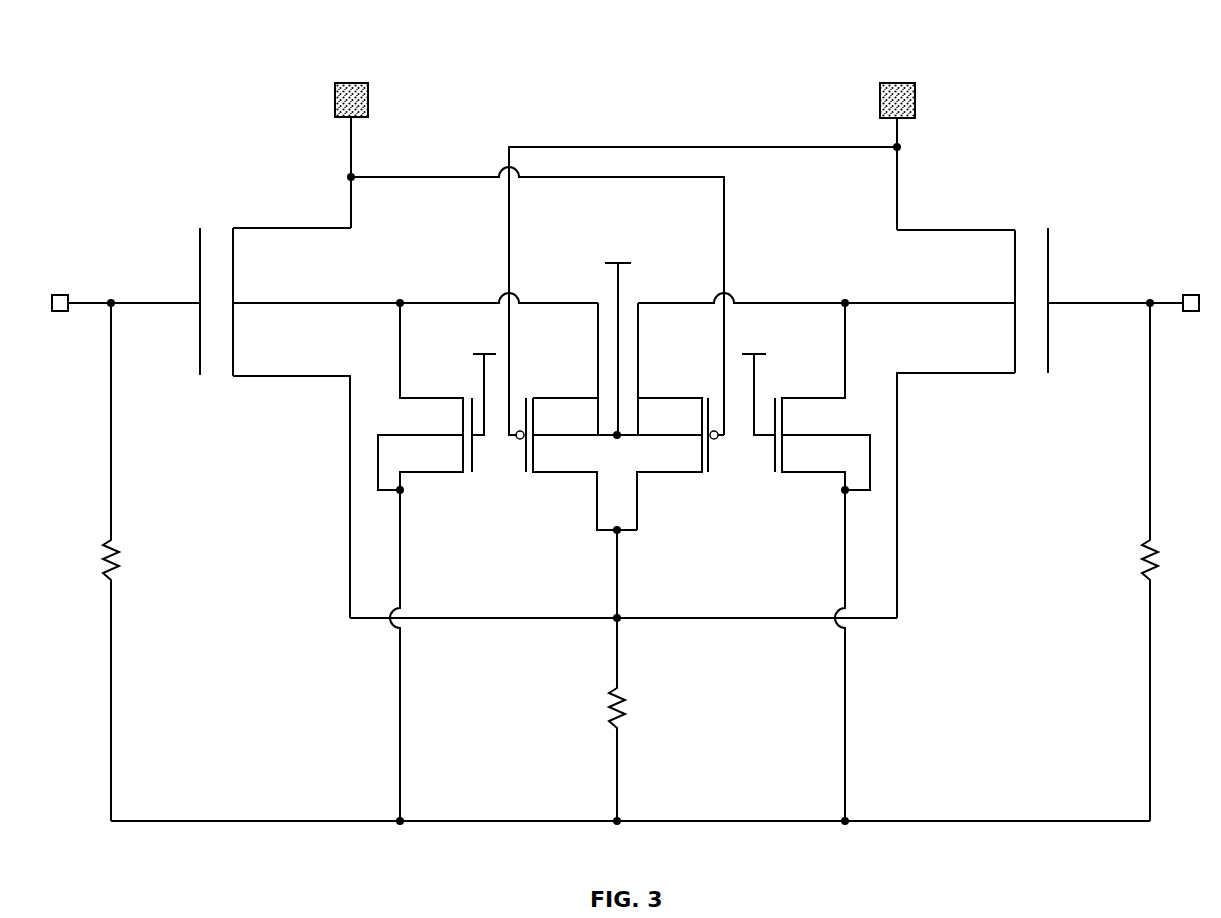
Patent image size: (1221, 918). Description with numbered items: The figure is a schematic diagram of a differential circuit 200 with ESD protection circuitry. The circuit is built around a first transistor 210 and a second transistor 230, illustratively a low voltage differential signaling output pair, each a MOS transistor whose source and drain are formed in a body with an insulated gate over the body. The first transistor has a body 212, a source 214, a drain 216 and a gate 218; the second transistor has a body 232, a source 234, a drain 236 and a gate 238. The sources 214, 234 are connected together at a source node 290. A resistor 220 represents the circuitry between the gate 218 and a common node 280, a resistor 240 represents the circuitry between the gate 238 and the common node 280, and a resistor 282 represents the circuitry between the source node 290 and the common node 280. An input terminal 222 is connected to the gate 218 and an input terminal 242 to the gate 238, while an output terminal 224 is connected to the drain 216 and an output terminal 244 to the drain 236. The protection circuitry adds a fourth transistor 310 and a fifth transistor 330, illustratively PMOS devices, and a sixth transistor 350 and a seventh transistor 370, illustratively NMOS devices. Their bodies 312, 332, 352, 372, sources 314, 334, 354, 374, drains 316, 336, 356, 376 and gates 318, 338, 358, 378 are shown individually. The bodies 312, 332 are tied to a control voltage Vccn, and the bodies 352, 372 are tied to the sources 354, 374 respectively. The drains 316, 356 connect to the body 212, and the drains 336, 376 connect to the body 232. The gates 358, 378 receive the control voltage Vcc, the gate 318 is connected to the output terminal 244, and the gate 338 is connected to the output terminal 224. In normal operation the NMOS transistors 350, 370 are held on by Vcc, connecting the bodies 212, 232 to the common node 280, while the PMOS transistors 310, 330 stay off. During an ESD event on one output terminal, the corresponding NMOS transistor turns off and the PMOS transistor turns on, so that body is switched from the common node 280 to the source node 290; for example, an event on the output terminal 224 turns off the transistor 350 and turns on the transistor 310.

The differential circuit 200 is at (148, 85).
The first transistor 210 is at (214, 378).
The body of first transistor 212 is at (316, 301).
The source of first transistor 214 is at (316, 374).
The drain of first transistor 216 is at (326, 227).
The gate of first transistor 218 is at (198, 299).
The resistor 220 is at (118, 553).
The input terminal 222 is at (86, 298).
The output terminal 224 is at (350, 150).
The second transistor 230 is at (1033, 377).
The body of second transistor 232 is at (980, 300).
The source of second transistor 234 is at (973, 371).
The drain of second transistor 236 is at (955, 228).
The gate of second transistor 238 is at (1050, 298).
The resistor 240 is at (1145, 560).
The input terminal 242 is at (1175, 298).
The output terminal 244 is at (915, 98).
The common node 280 is at (621, 819).
The resistor 282 is at (626, 703).
The source node 290 is at (619, 614).
The fourth transistor 310 is at (532, 477).
The body of fourth transistor 312 is at (597, 433).
The source of fourth transistor 314 is at (540, 471).
The drain of fourth transistor 316 is at (562, 397).
The gate of fourth transistor 318 is at (518, 398).
The fifth transistor 330 is at (705, 478).
The body of fifth transistor 332 is at (692, 433).
The source of fifth transistor 334 is at (694, 471).
The drain of fifth transistor 336 is at (658, 397).
The gate of fifth transistor 338 is at (714, 398).
The sixth transistor 350 is at (468, 482).
The body of sixth transistor 352 is at (452, 433).
The source of sixth transistor 354 is at (452, 471).
The drain of sixth transistor 356 is at (425, 397).
The gate of sixth transistor 358 is at (475, 448).
The seventh transistor 370 is at (777, 478).
The body of seventh transistor 372 is at (798, 433).
The source of seventh transistor 374 is at (798, 471).
The drain of seventh transistor 376 is at (797, 397).
The gate of seventh transistor 378 is at (778, 398).